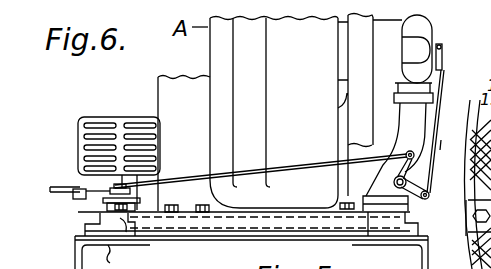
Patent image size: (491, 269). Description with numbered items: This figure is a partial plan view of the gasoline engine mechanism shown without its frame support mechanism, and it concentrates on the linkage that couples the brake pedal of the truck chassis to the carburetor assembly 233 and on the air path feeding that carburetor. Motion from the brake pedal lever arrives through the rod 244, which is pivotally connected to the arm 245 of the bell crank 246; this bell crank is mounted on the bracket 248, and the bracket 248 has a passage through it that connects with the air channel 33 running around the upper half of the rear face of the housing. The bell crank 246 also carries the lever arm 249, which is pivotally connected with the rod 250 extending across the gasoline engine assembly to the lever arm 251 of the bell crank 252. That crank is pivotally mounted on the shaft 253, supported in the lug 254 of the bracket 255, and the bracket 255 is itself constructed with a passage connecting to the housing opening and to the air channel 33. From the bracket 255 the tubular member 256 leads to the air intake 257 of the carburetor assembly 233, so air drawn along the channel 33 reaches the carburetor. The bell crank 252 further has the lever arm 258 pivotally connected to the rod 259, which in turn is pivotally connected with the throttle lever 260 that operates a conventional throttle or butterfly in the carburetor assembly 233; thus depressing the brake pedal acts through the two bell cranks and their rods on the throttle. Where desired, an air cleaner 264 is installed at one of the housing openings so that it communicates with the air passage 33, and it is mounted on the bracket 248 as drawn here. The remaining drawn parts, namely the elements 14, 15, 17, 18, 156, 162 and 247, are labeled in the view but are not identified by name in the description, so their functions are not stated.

The frame member 14 is at (444, 255).
The frame side 15 is at (76, 265).
The base plate 17 is at (76, 238).
The frame rail 18 is at (141, 246).
The air channel 33 is at (207, 215).
The wheel hub 156 is at (468, 203).
The wheel 162 is at (481, 150).
The carburetor assembly 233 is at (430, 37).
The rod 244 is at (64, 184).
The arm 245 is at (100, 200).
The bell crank 246 is at (110, 189).
The mounting bolt 247 is at (140, 205).
The bracket 248 is at (100, 210).
The lever arm 249 is at (140, 191).
The rod 250 is at (318, 162).
The lever arm 251 is at (407, 157).
The bell crank 252 is at (385, 196).
The shaft 253 is at (412, 181).
The lug 254 is at (410, 200).
The bracket 255 is at (415, 212).
The tubular member 256 is at (428, 122).
The air intake 257 is at (432, 92).
The lever arm 258 is at (430, 192).
The rod 259 is at (438, 153).
The throttle lever 260 is at (442, 60).
The air cleaner 264 is at (78, 128).